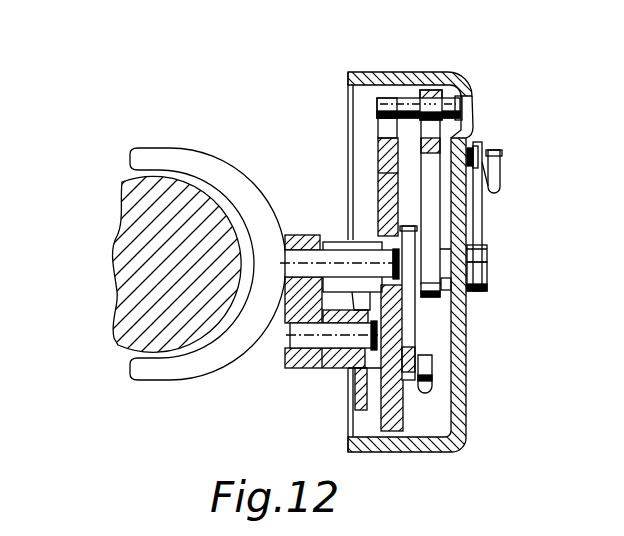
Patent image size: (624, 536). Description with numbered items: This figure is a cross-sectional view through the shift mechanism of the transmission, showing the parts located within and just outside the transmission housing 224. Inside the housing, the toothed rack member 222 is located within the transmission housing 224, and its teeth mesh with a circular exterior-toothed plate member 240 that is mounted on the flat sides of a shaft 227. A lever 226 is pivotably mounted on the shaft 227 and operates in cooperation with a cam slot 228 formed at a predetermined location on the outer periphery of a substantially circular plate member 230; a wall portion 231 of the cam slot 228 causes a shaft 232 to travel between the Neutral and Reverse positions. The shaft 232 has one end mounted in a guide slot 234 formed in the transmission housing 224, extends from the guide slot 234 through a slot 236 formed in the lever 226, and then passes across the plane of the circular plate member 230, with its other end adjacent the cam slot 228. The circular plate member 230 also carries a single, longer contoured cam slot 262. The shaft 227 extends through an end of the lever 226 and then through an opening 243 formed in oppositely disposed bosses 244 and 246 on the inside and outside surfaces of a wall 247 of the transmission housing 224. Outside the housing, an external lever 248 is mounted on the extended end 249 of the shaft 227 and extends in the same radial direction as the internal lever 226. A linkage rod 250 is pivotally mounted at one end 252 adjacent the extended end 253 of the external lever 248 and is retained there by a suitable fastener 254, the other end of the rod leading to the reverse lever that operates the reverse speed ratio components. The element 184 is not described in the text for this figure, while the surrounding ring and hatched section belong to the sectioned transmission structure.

The ring clamp 184 is at (233, 363).
The toothed rack member 222 is at (416, 359).
The transmission housing 224 is at (400, 80).
The lever 226 is at (430, 177).
The shaft 227 is at (440, 249).
The cam slot 228 is at (380, 133).
The circular plate member 230 is at (380, 160).
The wall portion 231 is at (389, 120).
The shaft 232 is at (377, 107).
The guide slot 234 is at (459, 104).
The slot 236 is at (437, 135).
The circular exterior-toothed plate member 240 is at (400, 234).
The opening 243 is at (456, 283).
The boss 244 is at (429, 290).
The boss 246 is at (487, 285).
The wall 247 is at (458, 368).
The external lever 248 is at (482, 214).
The extended end 249 is at (485, 264).
The linkage rod 250 is at (502, 181).
The end 252 is at (500, 157).
The extended end 253 is at (474, 151).
The fastener 254 is at (483, 176).
The contoured cam slot 262 is at (381, 251).